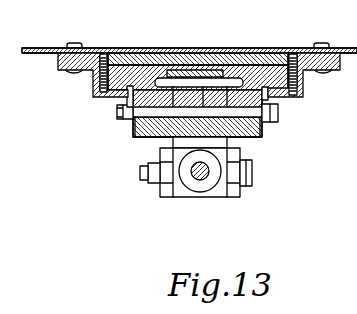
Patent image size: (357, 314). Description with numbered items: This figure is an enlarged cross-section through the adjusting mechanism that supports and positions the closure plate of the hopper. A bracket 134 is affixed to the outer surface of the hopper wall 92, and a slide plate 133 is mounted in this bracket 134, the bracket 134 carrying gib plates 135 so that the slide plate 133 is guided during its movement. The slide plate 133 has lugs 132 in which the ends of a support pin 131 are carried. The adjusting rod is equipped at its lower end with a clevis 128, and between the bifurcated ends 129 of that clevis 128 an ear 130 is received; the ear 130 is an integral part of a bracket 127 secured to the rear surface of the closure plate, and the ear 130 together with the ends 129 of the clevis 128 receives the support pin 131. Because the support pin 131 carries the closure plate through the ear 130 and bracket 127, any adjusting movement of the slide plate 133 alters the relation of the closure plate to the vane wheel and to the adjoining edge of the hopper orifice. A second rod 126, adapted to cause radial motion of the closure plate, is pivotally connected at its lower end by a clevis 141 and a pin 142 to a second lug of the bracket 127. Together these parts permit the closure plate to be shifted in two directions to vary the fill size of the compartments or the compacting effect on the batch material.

The hopper wall 92 is at (132, 50).
The slide plate 133 is at (166, 62).
The bracket 134 is at (221, 56).
The gib plate 135 is at (93, 96).
The support pin 131 is at (278, 115).
The lug 132 is at (134, 128).
The bifurcated end 129 is at (165, 130).
The clevis 128 is at (157, 132).
The ear 130 is at (163, 140).
The bracket 127 is at (253, 168).
The pin 142 is at (248, 190).
The clevis 141 is at (201, 182).
The rod 126 is at (187, 196).